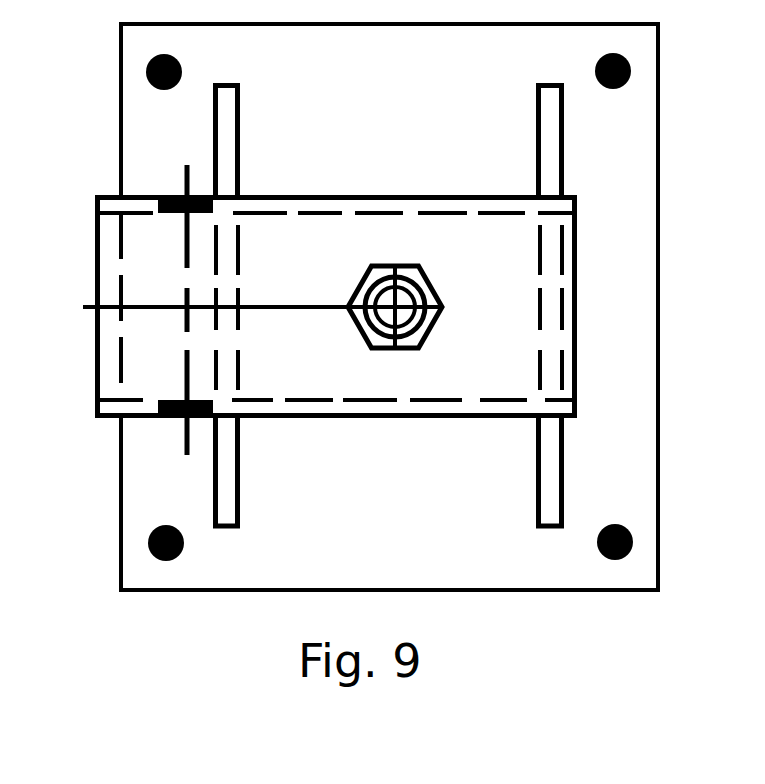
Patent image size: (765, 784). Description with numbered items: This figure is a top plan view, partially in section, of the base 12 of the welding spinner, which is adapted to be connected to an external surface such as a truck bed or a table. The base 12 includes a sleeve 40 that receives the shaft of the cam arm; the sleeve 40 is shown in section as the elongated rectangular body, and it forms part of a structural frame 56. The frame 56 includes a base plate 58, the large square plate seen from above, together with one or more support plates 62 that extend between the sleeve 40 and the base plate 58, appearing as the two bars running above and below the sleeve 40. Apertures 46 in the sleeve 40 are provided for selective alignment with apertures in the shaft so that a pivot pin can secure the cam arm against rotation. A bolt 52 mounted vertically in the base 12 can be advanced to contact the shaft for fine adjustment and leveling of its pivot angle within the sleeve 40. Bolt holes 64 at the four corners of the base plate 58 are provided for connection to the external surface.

The base 12 is at (112, 493).
The sleeve 40 is at (402, 418).
The apertures 46 is at (168, 195).
The bolt 52 is at (362, 275).
The structural frame 56 is at (565, 590).
The base plate 58 is at (321, 547).
The support plates 62 is at (238, 143).
The bolt holes 64 is at (150, 543).